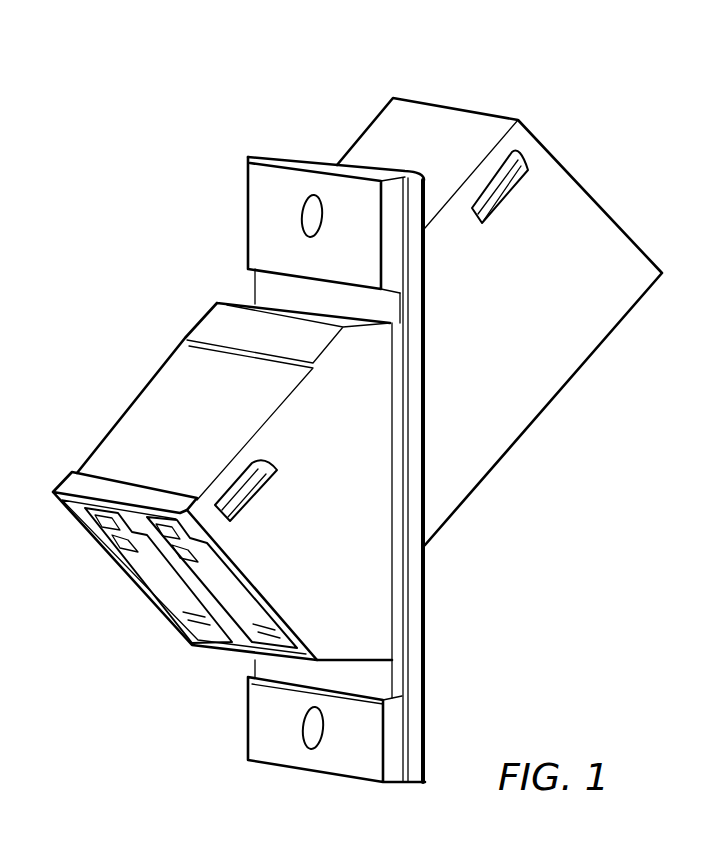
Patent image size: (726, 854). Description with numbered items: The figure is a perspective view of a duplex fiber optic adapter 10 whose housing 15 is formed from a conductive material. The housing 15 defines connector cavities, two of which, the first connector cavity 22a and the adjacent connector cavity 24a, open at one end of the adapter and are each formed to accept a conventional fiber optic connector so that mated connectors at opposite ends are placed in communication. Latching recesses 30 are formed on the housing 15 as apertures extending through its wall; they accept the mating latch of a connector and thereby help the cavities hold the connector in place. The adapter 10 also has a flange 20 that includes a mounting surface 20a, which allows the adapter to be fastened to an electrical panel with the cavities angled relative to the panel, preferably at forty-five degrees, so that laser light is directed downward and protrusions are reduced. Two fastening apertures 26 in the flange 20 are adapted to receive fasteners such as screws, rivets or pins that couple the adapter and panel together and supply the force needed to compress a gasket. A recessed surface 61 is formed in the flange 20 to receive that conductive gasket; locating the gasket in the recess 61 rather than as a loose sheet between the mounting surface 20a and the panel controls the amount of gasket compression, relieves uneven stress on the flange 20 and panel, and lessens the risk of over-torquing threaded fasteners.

The duplex fiber optic adapter 10 is at (580, 93).
The housing 15 is at (522, 433).
The flange 20 is at (283, 157).
The mounting surface 20a is at (265, 198).
The first connector cavity 22a is at (163, 582).
The connector cavity 24a is at (247, 602).
The fastening apertures 26 is at (322, 215).
The latching recesses 30 is at (508, 177).
The recessed surface 61 is at (279, 291).